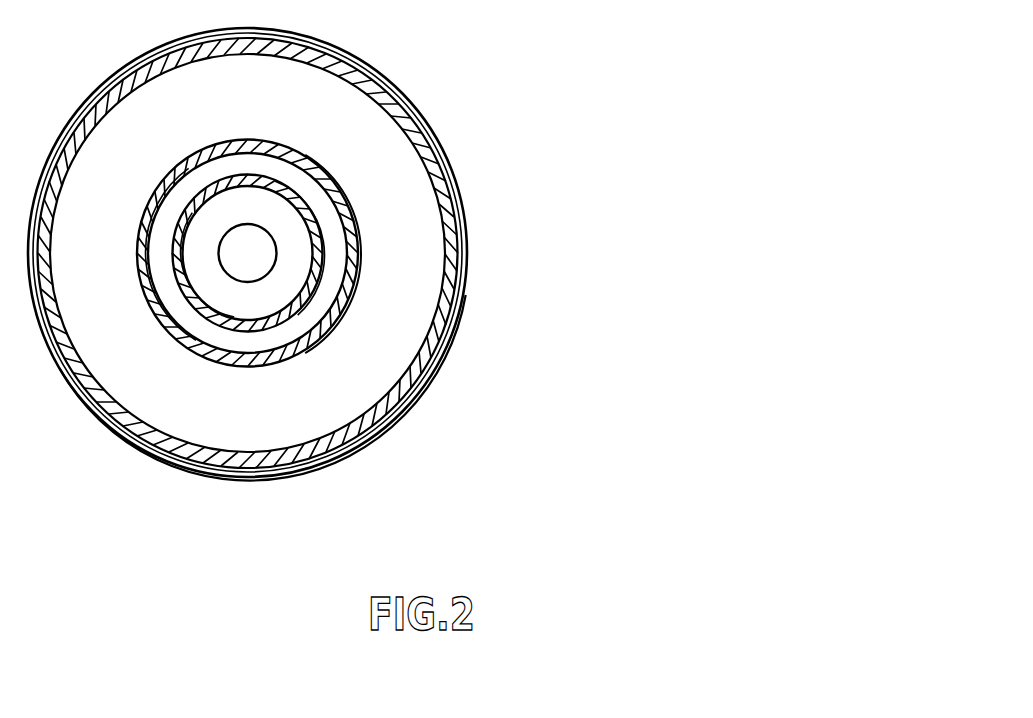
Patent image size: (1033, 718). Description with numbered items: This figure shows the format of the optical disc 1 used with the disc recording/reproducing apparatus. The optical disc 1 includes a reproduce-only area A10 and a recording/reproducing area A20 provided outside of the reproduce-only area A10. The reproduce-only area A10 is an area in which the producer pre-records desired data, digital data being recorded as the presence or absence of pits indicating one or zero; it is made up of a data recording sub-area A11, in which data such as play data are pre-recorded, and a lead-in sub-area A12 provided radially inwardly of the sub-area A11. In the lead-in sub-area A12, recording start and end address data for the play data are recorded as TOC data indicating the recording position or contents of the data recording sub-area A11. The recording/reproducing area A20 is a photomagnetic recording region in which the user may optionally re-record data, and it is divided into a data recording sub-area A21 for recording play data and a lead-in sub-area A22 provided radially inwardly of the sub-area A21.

The optical disc 1 is at (459, 254).
The reproduce-only area A10 is at (505, 216).
The data recording sub-area A11 is at (343, 197).
The lead-in sub-area A12 is at (318, 206).
The recording/reproducing area A20 is at (470, 253).
The data recording sub-area A21 is at (397, 292).
The lead-in sub-area A22 is at (355, 222).